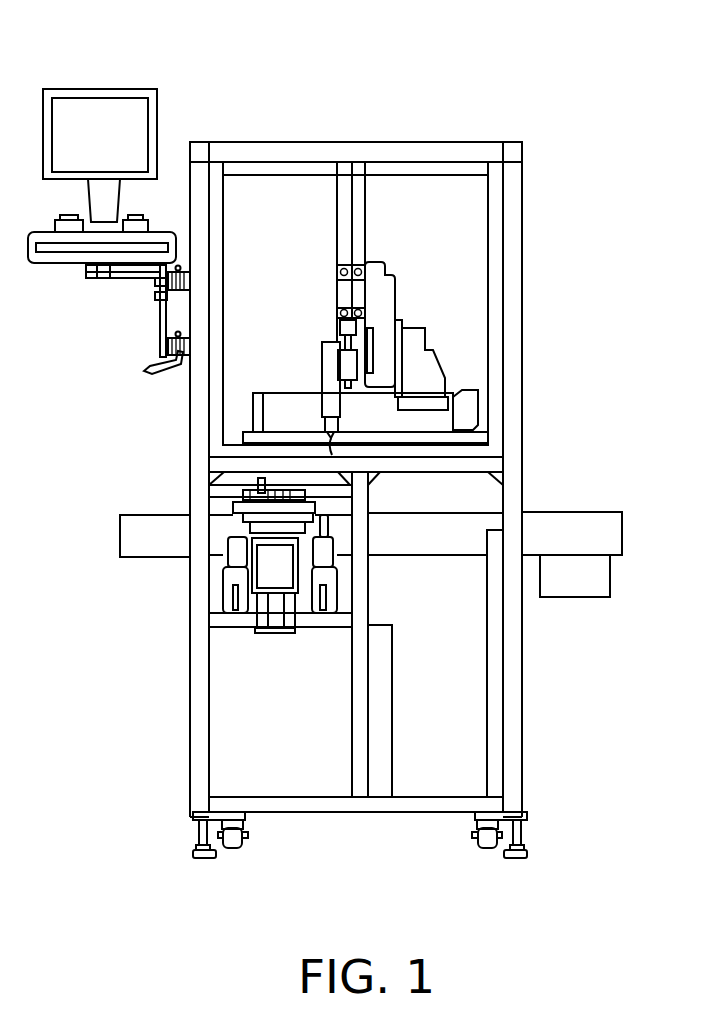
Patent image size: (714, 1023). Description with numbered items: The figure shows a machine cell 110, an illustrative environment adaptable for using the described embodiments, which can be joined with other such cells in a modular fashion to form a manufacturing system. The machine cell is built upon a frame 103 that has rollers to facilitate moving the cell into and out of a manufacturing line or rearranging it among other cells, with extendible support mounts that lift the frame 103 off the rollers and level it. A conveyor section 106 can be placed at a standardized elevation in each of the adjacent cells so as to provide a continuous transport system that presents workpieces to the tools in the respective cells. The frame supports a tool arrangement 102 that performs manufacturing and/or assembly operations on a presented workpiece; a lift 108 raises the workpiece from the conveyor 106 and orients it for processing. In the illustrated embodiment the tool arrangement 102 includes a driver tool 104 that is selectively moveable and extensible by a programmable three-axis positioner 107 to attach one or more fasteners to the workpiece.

The dispensing system 110 is at (459, 82).
The tool arrangement 102 is at (238, 375).
The frame 103 is at (523, 393).
The driver tool 104 is at (333, 457).
The conveyor section 106 is at (120, 529).
The programmable three-axis positioner 107 is at (425, 306).
The lift 108 is at (222, 635).